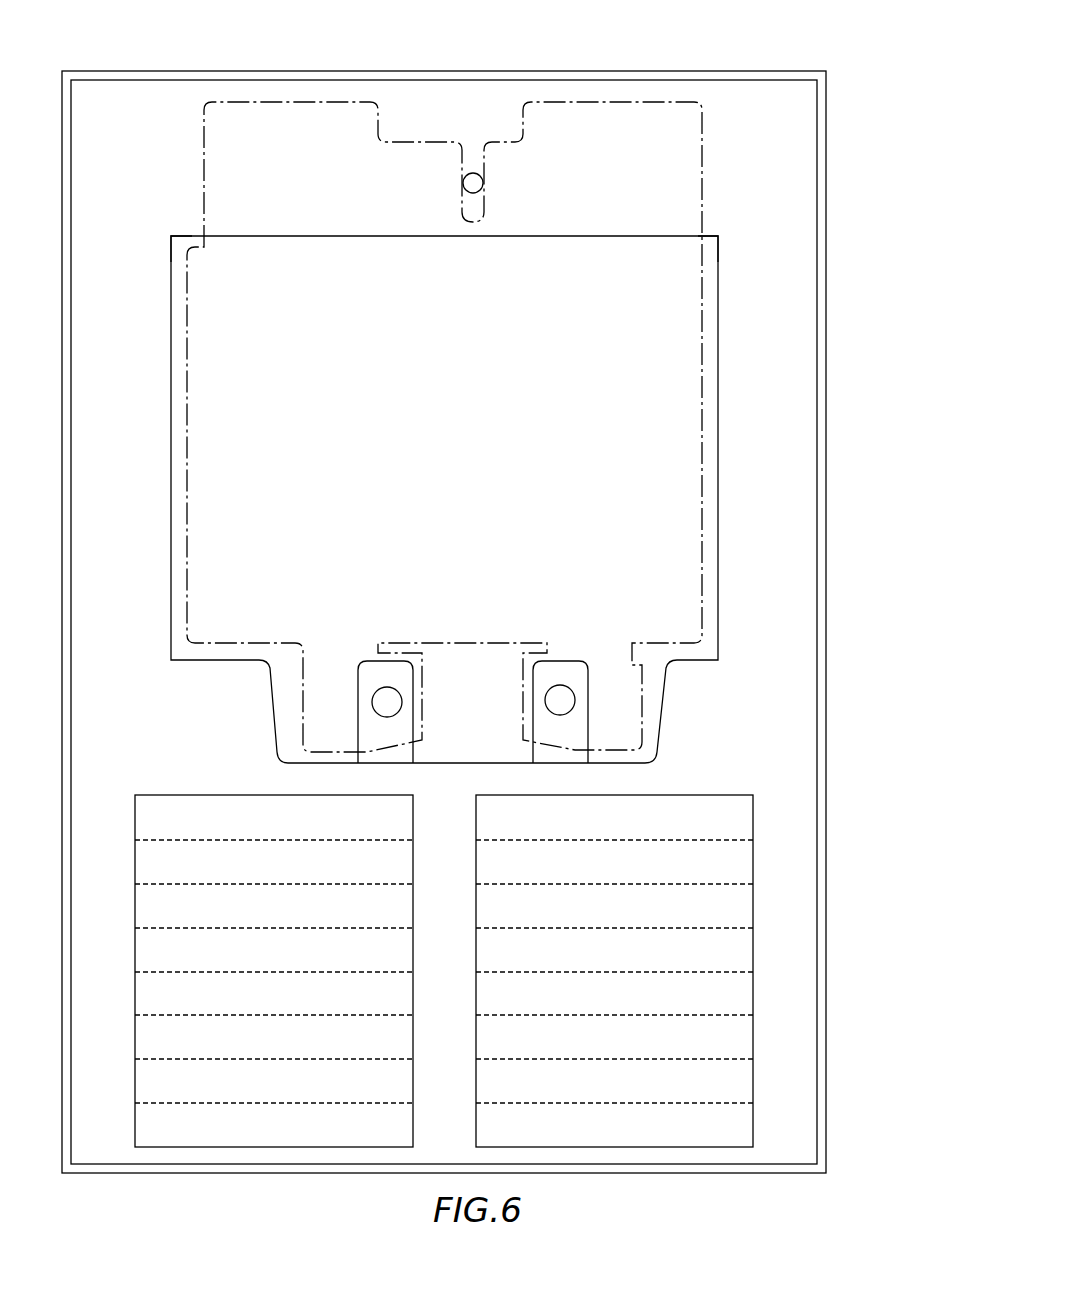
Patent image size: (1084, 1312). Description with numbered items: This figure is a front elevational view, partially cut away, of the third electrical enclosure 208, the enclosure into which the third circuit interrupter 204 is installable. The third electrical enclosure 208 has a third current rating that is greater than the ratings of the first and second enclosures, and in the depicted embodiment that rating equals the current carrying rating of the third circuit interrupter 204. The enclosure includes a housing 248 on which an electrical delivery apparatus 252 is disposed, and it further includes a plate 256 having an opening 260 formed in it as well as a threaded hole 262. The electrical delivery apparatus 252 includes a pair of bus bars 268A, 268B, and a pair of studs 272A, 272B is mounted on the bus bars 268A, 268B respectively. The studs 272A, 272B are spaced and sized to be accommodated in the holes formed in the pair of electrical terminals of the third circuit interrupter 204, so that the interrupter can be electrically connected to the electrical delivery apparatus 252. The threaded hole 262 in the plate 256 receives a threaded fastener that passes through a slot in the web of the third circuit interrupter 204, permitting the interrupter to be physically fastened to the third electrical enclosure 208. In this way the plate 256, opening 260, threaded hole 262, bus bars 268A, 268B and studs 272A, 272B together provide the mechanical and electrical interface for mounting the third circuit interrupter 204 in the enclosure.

The third electrical enclosure 208 is at (598, 69).
The housing 248 is at (725, 71).
The electrical delivery apparatus 252 is at (591, 658).
The third circuit interrupter 204 is at (702, 356).
The threaded hole 262 is at (463, 190).
The plate 256 is at (185, 240).
The opening 260 is at (708, 238).
The bus bar 268A is at (377, 661).
The bus bar 268B is at (560, 661).
The stud 272A is at (372, 713).
The stud 272B is at (548, 694).